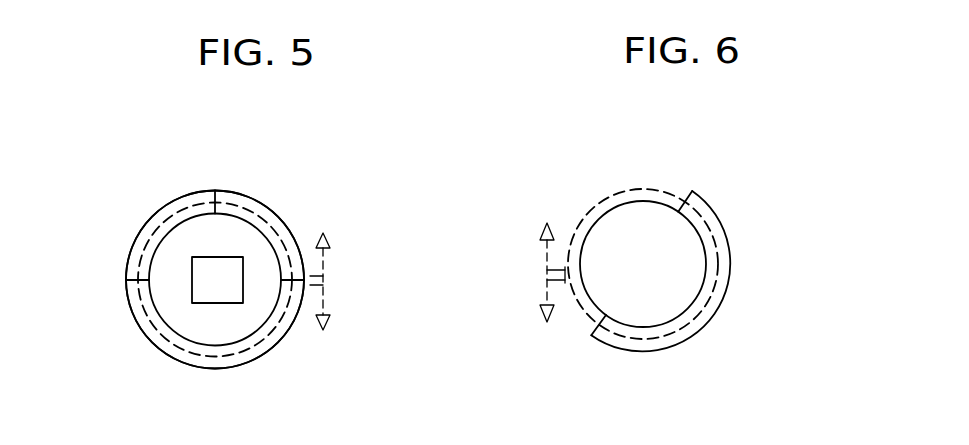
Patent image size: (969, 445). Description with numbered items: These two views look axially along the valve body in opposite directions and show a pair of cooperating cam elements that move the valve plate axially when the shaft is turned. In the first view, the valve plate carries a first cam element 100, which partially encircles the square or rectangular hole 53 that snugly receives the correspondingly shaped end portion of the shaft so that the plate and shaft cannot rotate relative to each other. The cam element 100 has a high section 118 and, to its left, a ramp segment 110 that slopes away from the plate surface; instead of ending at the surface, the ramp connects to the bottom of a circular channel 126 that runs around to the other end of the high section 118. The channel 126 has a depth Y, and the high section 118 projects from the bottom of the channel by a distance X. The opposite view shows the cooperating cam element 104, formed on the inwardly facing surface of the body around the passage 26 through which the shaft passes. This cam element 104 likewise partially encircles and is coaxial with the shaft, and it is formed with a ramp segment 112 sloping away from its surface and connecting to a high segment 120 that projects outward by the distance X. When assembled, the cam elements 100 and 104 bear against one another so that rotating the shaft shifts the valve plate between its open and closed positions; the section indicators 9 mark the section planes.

In FIG. 5, the first cam element 100 is at (215, 244).
In FIG. 5, the ramp segment 110 is at (153, 218).
In FIG. 5, the high section 118 is at (287, 227).
In FIG. 5, the circular channel 126 is at (161, 310).
In FIG. 5, the hole 53 is at (301, 315).
In FIG. 5, the section line 9- 9 is at (332, 282).
In FIG. 6, the section line 9- 9 is at (536, 272).
In FIG. 6, the passage 26 is at (599, 238).
In FIG. 6, the cooperating cam element 104 is at (693, 270).
In FIG. 6, the ramp segment 112 is at (704, 260).
In FIG. 6, the high segment 120 is at (704, 355).